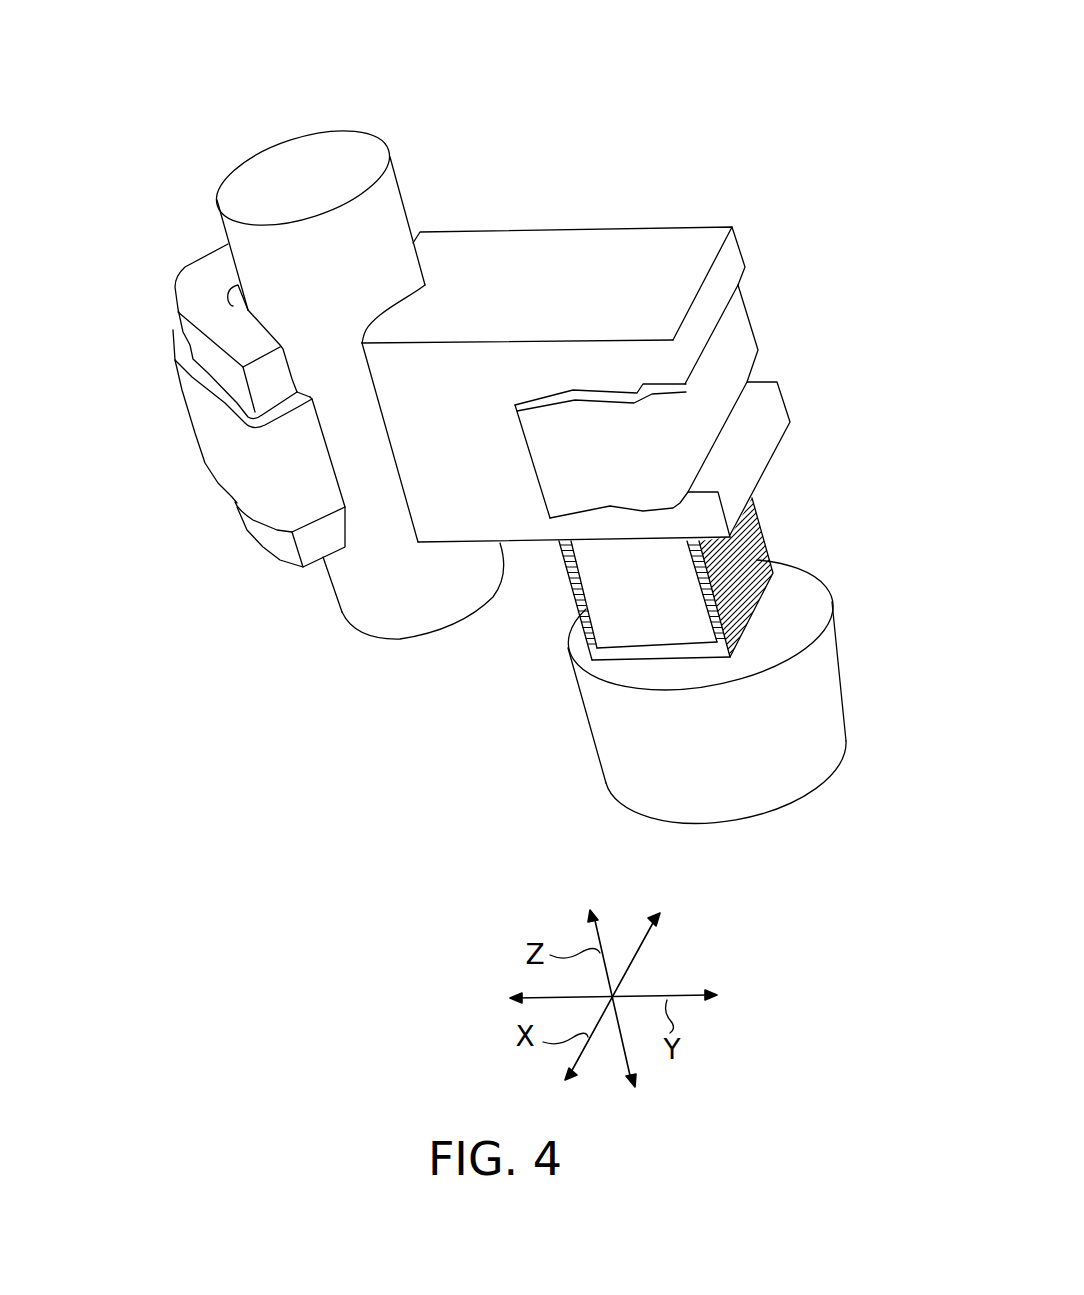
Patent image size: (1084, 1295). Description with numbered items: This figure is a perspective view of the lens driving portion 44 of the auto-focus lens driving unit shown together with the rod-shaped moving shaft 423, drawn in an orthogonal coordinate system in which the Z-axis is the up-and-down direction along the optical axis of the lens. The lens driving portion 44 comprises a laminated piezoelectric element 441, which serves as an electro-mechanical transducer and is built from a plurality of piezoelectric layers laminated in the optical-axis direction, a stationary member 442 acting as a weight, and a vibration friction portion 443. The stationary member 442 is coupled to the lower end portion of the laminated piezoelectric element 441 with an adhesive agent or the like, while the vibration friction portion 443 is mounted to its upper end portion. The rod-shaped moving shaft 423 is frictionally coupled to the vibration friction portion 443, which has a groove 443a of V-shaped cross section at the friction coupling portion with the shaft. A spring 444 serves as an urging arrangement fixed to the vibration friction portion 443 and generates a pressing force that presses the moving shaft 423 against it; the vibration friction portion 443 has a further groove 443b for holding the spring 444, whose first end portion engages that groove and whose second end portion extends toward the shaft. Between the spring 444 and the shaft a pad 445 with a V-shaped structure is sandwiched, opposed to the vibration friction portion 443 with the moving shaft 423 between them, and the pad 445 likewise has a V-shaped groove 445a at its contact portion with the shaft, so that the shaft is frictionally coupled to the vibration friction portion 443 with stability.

The lens driving portion 44 is at (610, 98).
The rod-shaped moving shaft 423 is at (357, 597).
The laminated piezoelectric element 441 is at (748, 548).
The stationary member 442 is at (727, 692).
The vibration friction portion 443 is at (725, 272).
The groove 443a is at (405, 305).
The groove 443b is at (748, 400).
The spring 444 is at (725, 352).
The pad 445 is at (203, 346).
The groove 445a is at (232, 305).